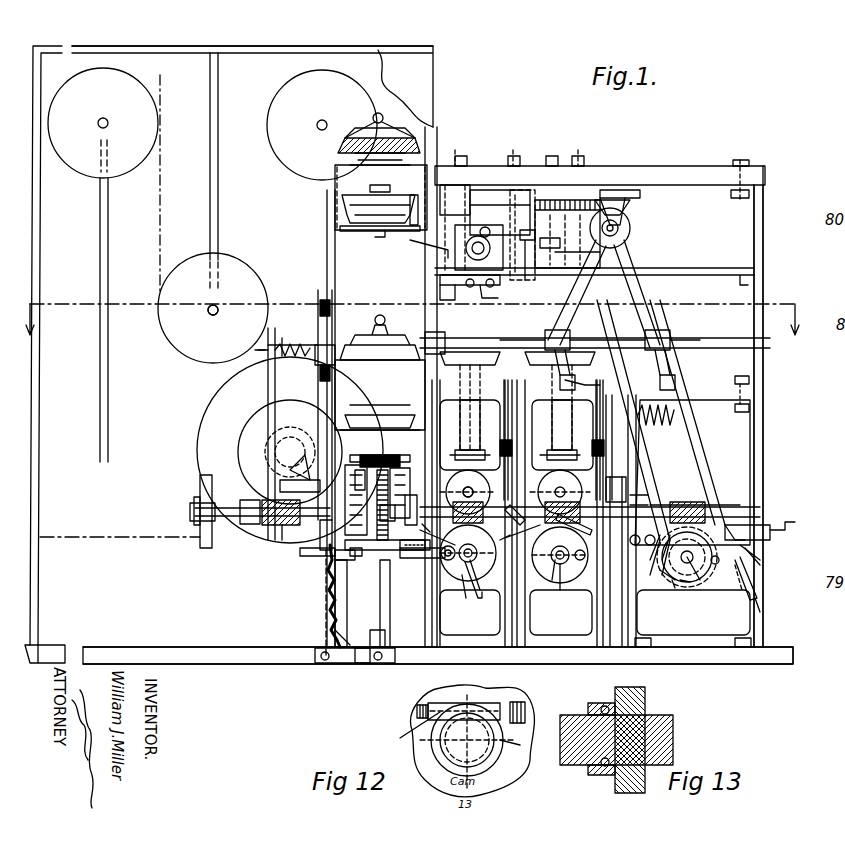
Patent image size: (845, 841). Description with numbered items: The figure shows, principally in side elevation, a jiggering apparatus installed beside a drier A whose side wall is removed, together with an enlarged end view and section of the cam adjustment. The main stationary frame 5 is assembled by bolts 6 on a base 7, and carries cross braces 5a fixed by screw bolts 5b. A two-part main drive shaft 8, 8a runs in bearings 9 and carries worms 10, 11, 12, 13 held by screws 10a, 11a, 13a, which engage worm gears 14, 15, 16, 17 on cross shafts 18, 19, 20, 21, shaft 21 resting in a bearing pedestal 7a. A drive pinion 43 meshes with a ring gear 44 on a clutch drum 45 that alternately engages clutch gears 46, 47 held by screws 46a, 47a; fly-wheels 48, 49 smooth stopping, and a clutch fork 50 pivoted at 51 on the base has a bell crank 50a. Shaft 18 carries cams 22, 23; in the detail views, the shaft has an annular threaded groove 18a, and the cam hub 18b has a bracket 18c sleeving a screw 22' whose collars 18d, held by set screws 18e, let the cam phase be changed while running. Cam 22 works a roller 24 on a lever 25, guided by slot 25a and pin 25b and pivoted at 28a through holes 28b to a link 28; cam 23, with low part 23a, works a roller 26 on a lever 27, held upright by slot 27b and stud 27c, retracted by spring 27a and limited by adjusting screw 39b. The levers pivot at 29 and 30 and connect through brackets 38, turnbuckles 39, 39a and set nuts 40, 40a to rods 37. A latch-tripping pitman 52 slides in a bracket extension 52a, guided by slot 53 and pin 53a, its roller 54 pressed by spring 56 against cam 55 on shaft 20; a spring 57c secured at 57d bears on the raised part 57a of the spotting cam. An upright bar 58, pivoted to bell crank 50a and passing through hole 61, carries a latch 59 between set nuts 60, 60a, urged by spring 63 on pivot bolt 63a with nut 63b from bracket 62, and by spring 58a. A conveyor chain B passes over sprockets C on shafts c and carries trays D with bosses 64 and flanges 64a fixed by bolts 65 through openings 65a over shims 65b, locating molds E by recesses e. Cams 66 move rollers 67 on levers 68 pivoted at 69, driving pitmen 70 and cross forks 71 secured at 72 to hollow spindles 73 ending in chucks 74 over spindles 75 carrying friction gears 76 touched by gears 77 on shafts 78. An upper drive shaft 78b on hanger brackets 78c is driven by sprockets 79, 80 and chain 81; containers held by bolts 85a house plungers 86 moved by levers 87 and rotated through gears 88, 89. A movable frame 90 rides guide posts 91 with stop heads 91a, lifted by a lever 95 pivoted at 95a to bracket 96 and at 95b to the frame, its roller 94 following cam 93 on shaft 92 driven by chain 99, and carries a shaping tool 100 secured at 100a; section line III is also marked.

In FIG. 1, the main stationary frame 5 is at (700, 175).
In FIG. 1, the cross braces 5a is at (516, 153).
In FIG. 1, the screw bolts 5b is at (462, 155).
In FIG. 1, the bolts 6 is at (740, 376).
In FIG. 1, the base 7 is at (690, 665).
In FIG. 1, the bearing pedestal 7a is at (285, 482).
In FIG. 1, the main drive shaft section 8 is at (664, 508).
In FIG. 1, the main drive shaft section 8a is at (226, 522).
In FIG. 1, the bearings 9 is at (250, 524).
In FIG. 1, the worm 10 is at (522, 500).
In FIG. 1, the screw 10a is at (705, 470).
In FIG. 1, the worm 11 is at (569, 531).
In FIG. 1, the screw 11a is at (538, 507).
In FIG. 1, the worm 12 is at (468, 492).
In FIG. 1, the worm 13 is at (280, 530).
In FIG. 1, the screw 13a is at (305, 556).
In FIG. 1, the worm gear 14 is at (688, 584).
In FIG. 1, the worm gear 15 is at (561, 612).
In FIG. 1, the worm gear 16 is at (458, 575).
In FIG. 1, the worm gear 17 is at (238, 440).
In FIG. 1, the shaft 18 is at (698, 578).
In FIG. 12, the shaft 18 is at (467, 742).
In FIG. 12, the annular threaded groove 18a is at (515, 745).
In FIG. 13, the annular threaded groove 18a is at (610, 740).
In FIG. 13, the cam hub 18b is at (598, 778).
In FIG. 12, the bracket portion 18c is at (467, 703).
In FIG. 12, the collars 18d is at (505, 710).
In FIG. 12, the set screws 18e is at (402, 735).
In FIG. 1, the shaft 19 is at (552, 570).
In FIG. 1, the shaft 20 is at (469, 595).
In FIG. 1, the shaft 21 is at (300, 489).
In FIG. 1, the cam 22 is at (678, 557).
In FIG. 12, the screw 22' is at (391, 718).
In FIG. 13, the screw 22' is at (611, 739).
In FIG. 1, the cam 23 is at (668, 584).
In FIG. 1, the low part 23a is at (675, 592).
In FIG. 1, the roller 24 is at (762, 553).
In FIG. 1, the lever 25 is at (772, 533).
In FIG. 1, the slot 25a is at (728, 495).
In FIG. 1, the pin or stud 25b is at (741, 515).
In FIG. 1, the roller 26 is at (752, 560).
In FIG. 1, the lever 27 is at (698, 435).
In FIG. 1, the retracting spring 27a is at (680, 418).
In FIG. 1, the slot 27b is at (735, 600).
In FIG. 1, the pin or stud 27c is at (730, 558).
In FIG. 1, the link or bar 28 is at (622, 450).
In FIG. 1, the pivot 28a is at (660, 500).
In FIG. 1, the pivoting holes 28b is at (656, 437).
In FIG. 1, the pivot 29 is at (770, 528).
In FIG. 1, the pivot 30 is at (754, 602).
In FIG. 1, the rods 37 is at (512, 340).
In FIG. 1, the terminal brackets 38 is at (618, 345).
In FIG. 1, the turnbuckle 39 is at (676, 372).
In FIG. 1, the turnbuckle 39a is at (600, 384).
In FIG. 1, the adjusting screw 39b is at (580, 378).
In FIG. 1, the set nut 40 is at (645, 325).
In FIG. 1, the set nut 40a is at (575, 337).
In FIG. 1, the drive pinion 43 is at (386, 462).
In FIG. 1, the ring gear 44 is at (384, 456).
In FIG. 1, the clutch drum 45 is at (394, 504).
In FIG. 1, the clutch gear 46 is at (412, 465).
In FIG. 1, the screw 46a is at (419, 504).
In FIG. 1, the clutch gear 47 is at (358, 500).
In FIG. 1, the screw 47a is at (382, 455).
In FIG. 1, the fly-wheel 48 is at (615, 562).
In FIG. 1, the fly-wheel 49 is at (200, 536).
In FIG. 1, the clutch fork 50 is at (382, 630).
In FIG. 1, the bell crank extremity 50a is at (350, 664).
In FIG. 1, the pivot 51 is at (380, 665).
In FIG. 1, the latch-tripping pitman 52 is at (397, 552).
In FIG. 1, the bracket extension 52a is at (390, 590).
In FIG. 1, the slot 53 is at (352, 603).
In FIG. 1, the pin 53a is at (354, 566).
In FIG. 1, the cam-contacting roller 54 is at (447, 560).
In FIG. 1, the cam 55 is at (468, 562).
In FIG. 1, the compression spring 56 is at (415, 552).
In FIG. 1, the raised part 57a is at (468, 551).
In FIG. 1, the spring 57c is at (478, 578).
In FIG. 1, the securing point 57d is at (484, 600).
In FIG. 1, the upright bar or pitman 58 is at (320, 592).
In FIG. 1, the spring 58a is at (340, 620).
In FIG. 1, the latch member 59 is at (292, 345).
In FIG. 1, the upper set nut 60 is at (318, 405).
In FIG. 1, the lower set nut 60a is at (315, 360).
In FIG. 1, the cut-out portion 61 is at (320, 550).
In FIG. 1, the upright bracket 62 is at (268, 386).
In FIG. 1, the compression spring 63 is at (290, 355).
In FIG. 1, the pivot bolt 63a is at (283, 340).
In FIG. 1, the nut 63b is at (262, 355).
In FIG. 1, the bosses 64 is at (400, 362).
In FIG. 1, the annular flanges 64a is at (392, 410).
In FIG. 1, the bolts 65 is at (370, 186).
In FIG. 1, the enlarged openings 65a is at (381, 185).
In FIG. 1, the shims 65b is at (365, 232).
In FIG. 1, the cams 66 is at (569, 576).
In FIG. 1, the cam-rollers 67 is at (560, 555).
In FIG. 1, the levers 68 is at (581, 555).
In FIG. 1, the adjustable pivot 69 is at (480, 529).
In FIG. 1, the pitmen 70 is at (598, 470).
In FIG. 1, the cross forks 71 is at (516, 417).
In FIG. 1, the securing point 72 is at (514, 424).
In FIG. 1, the hollow jigger spindles 73 is at (517, 506).
In FIG. 1, the chucks 74 is at (498, 366).
In FIG. 1, the spindles 75 is at (473, 416).
In FIG. 1, the friction gears 76 is at (510, 441).
In FIG. 1, the friction gears 77 is at (560, 492).
In FIG. 1, the shafts 78 is at (522, 492).
In FIG. 1, the upper drive shaft 78b is at (604, 294).
In FIG. 1, the hanger brackets 78c is at (622, 212).
In FIG. 1, the sprocket 79 is at (660, 578).
In FIG. 1, the sprocket 80 is at (631, 230).
In FIG. 1, the chain 81 is at (645, 276).
In FIG. 1, the bolts 85a is at (458, 152).
In FIG. 1, the plungers 86 is at (563, 258).
In FIG. 1, the levers 87 is at (605, 200).
In FIG. 1, the gears 88 is at (567, 220).
In FIG. 1, the gears 89 is at (640, 196).
In FIG. 1, the movable frame assembly 90 is at (499, 212).
In FIG. 1, the guide posts 91 is at (455, 221).
In FIG. 1, the lower stop heads 91a is at (440, 298).
In FIG. 1, the shaft 92 is at (445, 280).
In FIG. 1, the cam 93 is at (470, 252).
In FIG. 1, the cam roller 94 is at (484, 228).
In FIG. 1, the lever 95 is at (435, 228).
In FIG. 1, the adjustable pivot 95a is at (554, 245).
In FIG. 1, the pivot 95b is at (440, 232).
In FIG. 1, the bracket 96 is at (514, 198).
In FIG. 1, the chain 99 is at (522, 275).
In FIG. 1, the shaping tool 100 is at (488, 300).
In FIG. 1, the securing point 100a is at (468, 290).
In FIG. 1, the drier A is at (253, 47).
In FIG. 1, the conveyor chain B is at (160, 210).
In FIG. 1, the sprockets C is at (92, 165).
In FIG. 1, the mold carriers or trays D is at (382, 232).
In FIG. 1, the molds E is at (348, 138).
In FIG. 1, the pin a is at (332, 286).
In FIG. 1, the shafts c is at (208, 311).
In FIG. 1, the recessed portion e is at (352, 157).
In FIG. 1, the section line III is at (413, 331).